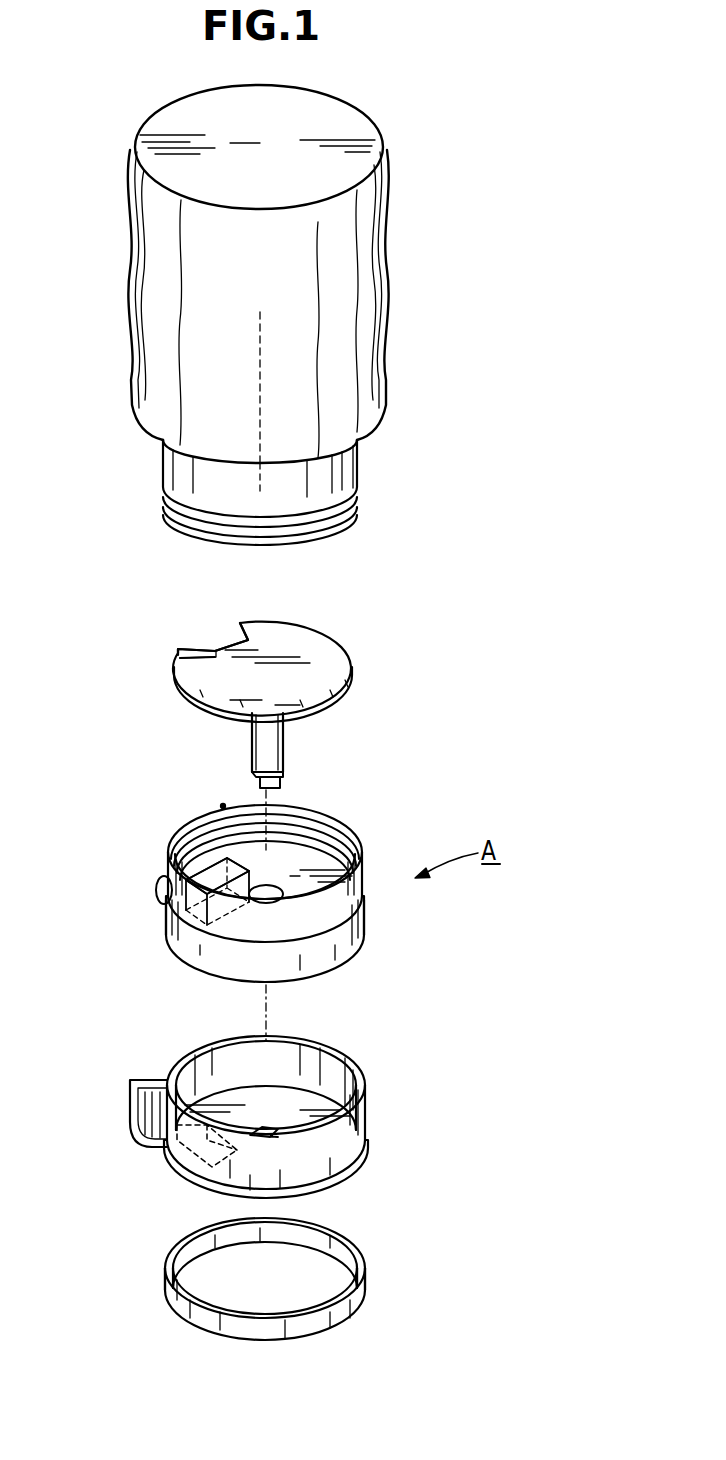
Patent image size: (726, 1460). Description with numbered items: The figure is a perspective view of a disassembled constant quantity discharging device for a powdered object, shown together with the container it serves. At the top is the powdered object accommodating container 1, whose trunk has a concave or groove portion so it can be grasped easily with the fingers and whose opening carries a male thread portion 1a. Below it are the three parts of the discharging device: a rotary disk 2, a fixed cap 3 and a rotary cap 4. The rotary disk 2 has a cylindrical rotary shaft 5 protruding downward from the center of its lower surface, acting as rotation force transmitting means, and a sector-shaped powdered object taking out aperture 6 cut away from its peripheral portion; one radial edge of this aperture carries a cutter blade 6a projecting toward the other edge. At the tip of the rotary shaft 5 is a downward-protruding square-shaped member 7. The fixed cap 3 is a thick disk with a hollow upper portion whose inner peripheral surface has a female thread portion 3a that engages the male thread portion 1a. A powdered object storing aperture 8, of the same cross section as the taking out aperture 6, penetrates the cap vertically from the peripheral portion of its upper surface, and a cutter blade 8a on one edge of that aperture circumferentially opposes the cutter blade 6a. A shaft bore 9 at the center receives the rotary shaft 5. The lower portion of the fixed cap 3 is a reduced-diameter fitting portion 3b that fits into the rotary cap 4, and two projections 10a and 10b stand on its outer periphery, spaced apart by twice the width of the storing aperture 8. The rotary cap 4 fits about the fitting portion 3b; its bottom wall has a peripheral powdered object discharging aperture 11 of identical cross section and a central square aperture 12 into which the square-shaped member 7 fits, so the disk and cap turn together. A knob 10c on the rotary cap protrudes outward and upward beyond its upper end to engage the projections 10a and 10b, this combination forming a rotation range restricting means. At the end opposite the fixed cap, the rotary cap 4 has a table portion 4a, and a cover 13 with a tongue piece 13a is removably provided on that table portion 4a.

The powdered object accommodating container 1 is at (378, 273).
The male thread portion 1a is at (357, 499).
The rotary disk 2 is at (337, 650).
The fixed cap 3 is at (360, 895).
The female thread portion 3a is at (337, 830).
The fitting portion 3b is at (355, 940).
The rotary cap 4 is at (353, 1137).
The table portion 4a is at (347, 1165).
The rotary shaft 5 is at (277, 733).
The powdered object taking out aperture 6 is at (216, 644).
The cutter blade 6a is at (180, 650).
The square-shaped member 7 is at (280, 780).
The powdered object storing aperture 8 is at (186, 862).
The cutter blade 8a is at (210, 858).
The shaft bore 9 is at (280, 900).
The projection 10a is at (160, 893).
The projection 10b is at (223, 805).
The knob 10c is at (130, 1100).
The powdered object discharging aperture 11 is at (190, 1143).
The square aperture 12 is at (279, 1131).
The cover 13 is at (363, 1305).
The tongue piece 13a is at (363, 1287).